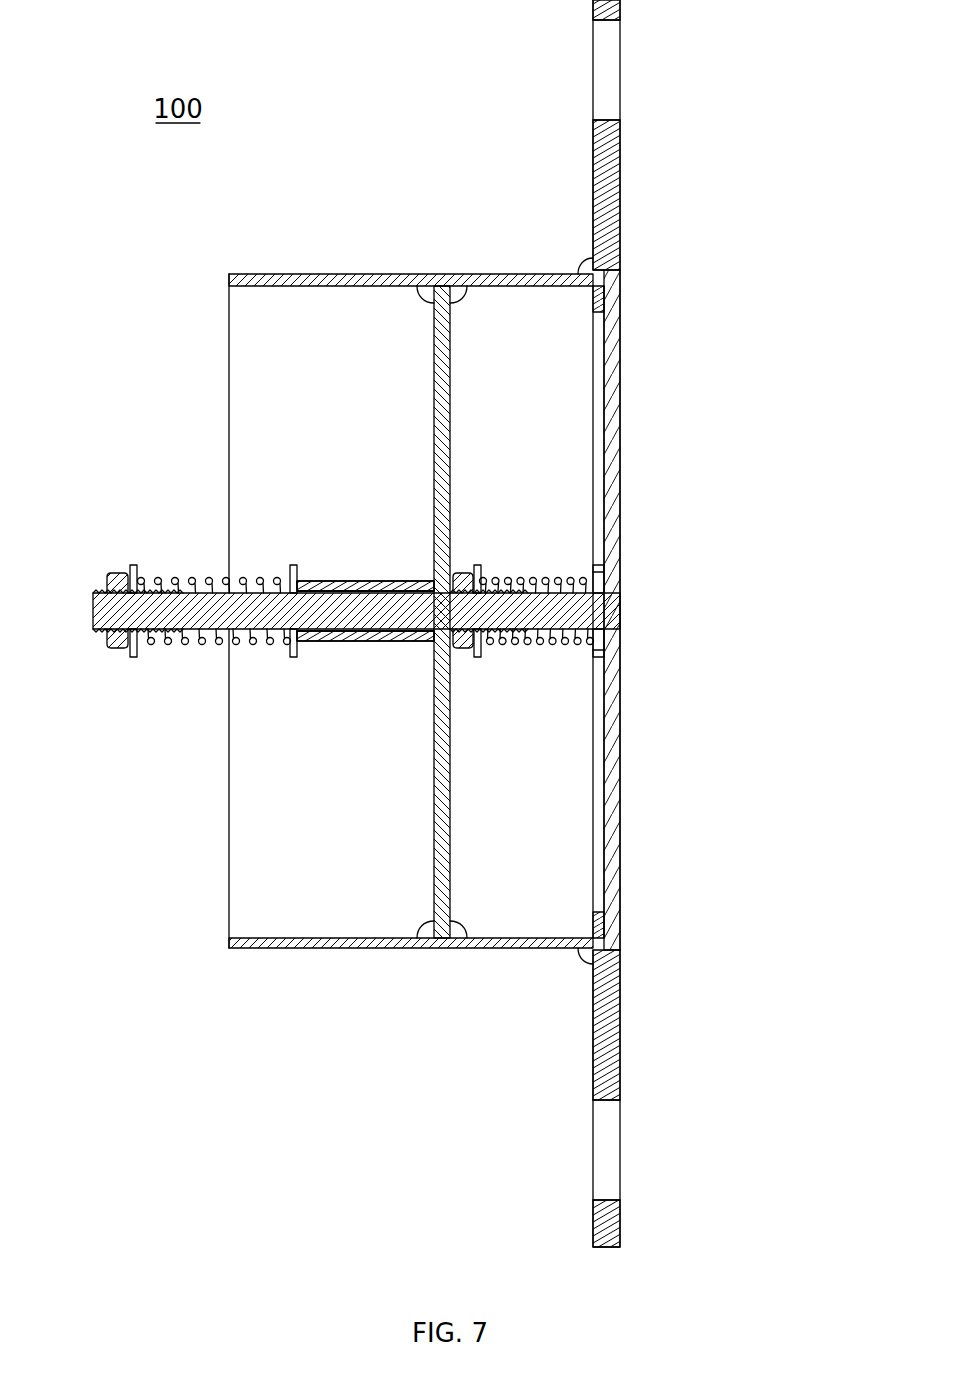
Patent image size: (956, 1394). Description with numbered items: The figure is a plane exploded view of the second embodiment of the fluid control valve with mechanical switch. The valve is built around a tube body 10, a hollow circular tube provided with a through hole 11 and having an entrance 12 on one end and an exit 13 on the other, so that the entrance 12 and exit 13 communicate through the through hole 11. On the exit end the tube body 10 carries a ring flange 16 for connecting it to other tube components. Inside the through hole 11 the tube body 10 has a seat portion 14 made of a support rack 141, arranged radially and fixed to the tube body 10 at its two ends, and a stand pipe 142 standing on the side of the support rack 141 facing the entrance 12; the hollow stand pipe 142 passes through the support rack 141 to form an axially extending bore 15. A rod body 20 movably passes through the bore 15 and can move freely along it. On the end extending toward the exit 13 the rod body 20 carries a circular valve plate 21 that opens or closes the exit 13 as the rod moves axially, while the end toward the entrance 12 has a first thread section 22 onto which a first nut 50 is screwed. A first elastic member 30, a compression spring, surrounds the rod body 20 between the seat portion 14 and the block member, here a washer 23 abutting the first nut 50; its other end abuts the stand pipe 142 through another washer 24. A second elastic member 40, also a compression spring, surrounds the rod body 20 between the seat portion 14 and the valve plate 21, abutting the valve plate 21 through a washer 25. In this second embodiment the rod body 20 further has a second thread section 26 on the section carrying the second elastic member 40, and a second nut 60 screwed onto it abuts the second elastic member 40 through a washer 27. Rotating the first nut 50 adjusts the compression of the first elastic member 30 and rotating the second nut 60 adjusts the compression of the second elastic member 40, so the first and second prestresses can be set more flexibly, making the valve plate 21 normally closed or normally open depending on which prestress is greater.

The tube body 10 is at (363, 573).
The through hole 11 is at (313, 300).
The entrance 12 is at (228, 375).
The exit 13 is at (600, 352).
The seat portion 14 is at (157, 727).
The support rack 141 is at (440, 765).
The stand pipe 142 is at (320, 642).
The bore 15 is at (375, 641).
The ring flange 16 is at (603, 1000).
The rod body 20 is at (343, 605).
The valve plate 21 is at (608, 468).
The first thread section 22 is at (103, 580).
The washer 23 is at (133, 570).
The washer 24 is at (293, 565).
The washer 25 is at (598, 640).
The second thread section 26 is at (515, 578).
The washer 27 is at (480, 575).
The first elastic member 30 is at (190, 650).
The second elastic member 40 is at (505, 650).
The first nut 50 is at (100, 633).
The second nut 60 is at (462, 578).